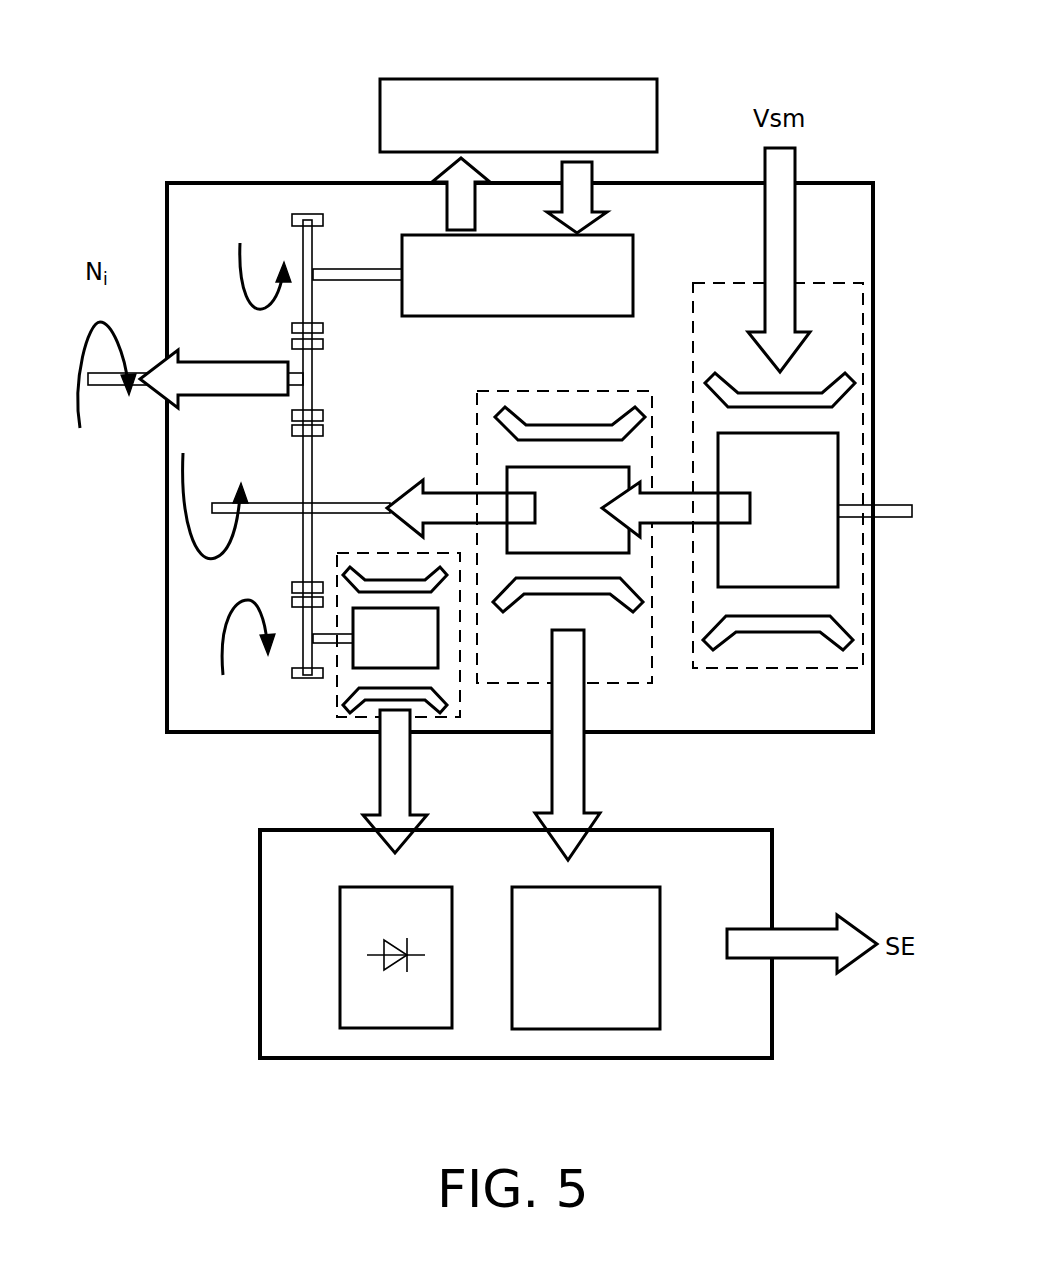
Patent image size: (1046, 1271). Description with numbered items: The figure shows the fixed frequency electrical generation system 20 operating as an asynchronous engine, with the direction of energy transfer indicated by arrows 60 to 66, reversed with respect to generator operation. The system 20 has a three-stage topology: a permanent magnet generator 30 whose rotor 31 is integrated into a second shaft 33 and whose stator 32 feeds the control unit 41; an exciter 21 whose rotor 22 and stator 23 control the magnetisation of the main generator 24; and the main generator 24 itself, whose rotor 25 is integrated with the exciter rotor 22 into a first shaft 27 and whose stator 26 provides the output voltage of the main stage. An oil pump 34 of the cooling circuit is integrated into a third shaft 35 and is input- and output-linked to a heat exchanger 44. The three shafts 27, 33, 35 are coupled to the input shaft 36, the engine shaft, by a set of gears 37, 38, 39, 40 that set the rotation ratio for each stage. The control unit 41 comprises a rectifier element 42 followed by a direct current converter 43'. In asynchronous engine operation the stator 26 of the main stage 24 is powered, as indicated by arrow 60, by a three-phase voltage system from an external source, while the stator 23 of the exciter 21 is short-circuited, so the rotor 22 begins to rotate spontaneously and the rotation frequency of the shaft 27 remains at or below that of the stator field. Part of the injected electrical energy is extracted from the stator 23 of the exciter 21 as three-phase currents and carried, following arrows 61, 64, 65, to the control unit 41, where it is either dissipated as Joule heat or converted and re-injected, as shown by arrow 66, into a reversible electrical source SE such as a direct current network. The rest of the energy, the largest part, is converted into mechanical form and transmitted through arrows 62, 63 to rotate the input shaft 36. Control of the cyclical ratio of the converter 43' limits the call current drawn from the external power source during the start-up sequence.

The system 20 is at (238, 727).
The exciter 21 is at (630, 683).
The rotor of the exciter 22 is at (525, 472).
The stator of the exciter 23 is at (603, 425).
The main generator 24 is at (836, 283).
The rotor of the main generator 25 is at (828, 573).
The stator of the main generator 26 is at (815, 397).
The first shaft 27 is at (887, 512).
The permanent magnet generator 30 is at (417, 712).
The rotor of the permanent magnet generator 31 is at (428, 663).
The stator of the permanent magnet generator 32 is at (390, 583).
The second shaft 33 is at (322, 640).
The oil pump 34 is at (452, 307).
The third shaft 35 is at (375, 273).
The input shaft 36 is at (107, 382).
The gear 37 is at (315, 415).
The gear 38 is at (300, 586).
The gear 39 is at (302, 218).
The gear 40 is at (310, 678).
The control unit 41 is at (283, 1007).
The rectifier element 42 is at (414, 1017).
The direct current converter 43' is at (586, 1000).
The heat exchanger 44 is at (612, 92).
The arrow 60 is at (792, 163).
The arrow 61 is at (667, 493).
The arrow 62 is at (410, 480).
The arrow 63 is at (225, 368).
The arrow 64 is at (400, 780).
The arrow 65 is at (582, 780).
The arrow 66 is at (800, 948).